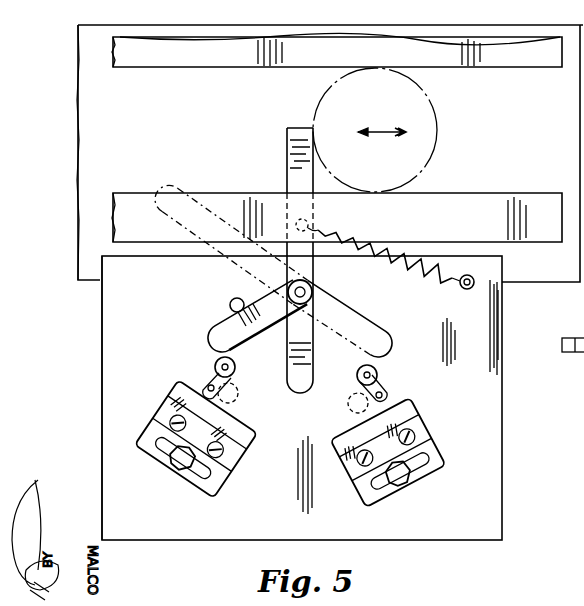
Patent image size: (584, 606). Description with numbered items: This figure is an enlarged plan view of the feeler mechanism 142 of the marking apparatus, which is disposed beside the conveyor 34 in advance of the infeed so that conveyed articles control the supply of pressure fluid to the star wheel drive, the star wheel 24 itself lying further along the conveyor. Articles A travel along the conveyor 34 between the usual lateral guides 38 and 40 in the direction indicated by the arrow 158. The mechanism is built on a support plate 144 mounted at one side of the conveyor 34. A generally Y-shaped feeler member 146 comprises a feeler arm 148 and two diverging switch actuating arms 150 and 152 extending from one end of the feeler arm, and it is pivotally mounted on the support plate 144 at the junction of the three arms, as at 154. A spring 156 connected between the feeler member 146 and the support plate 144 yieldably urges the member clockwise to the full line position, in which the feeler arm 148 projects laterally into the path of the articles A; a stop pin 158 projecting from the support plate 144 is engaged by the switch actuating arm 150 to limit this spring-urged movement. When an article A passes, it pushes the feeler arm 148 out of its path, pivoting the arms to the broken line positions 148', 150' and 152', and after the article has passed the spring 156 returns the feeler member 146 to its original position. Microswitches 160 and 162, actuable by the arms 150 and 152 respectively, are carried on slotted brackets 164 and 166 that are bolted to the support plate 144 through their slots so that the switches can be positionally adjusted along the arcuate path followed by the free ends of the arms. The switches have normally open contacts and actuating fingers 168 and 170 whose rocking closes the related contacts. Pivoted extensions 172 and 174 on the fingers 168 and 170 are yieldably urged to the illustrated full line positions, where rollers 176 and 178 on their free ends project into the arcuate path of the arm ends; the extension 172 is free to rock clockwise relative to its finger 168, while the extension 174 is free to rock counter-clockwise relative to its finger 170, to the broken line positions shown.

The star wheel 24 is at (573, 334).
The conveyor 34 is at (90, 137).
The lateral guide 38 is at (150, 68).
The lateral guide 40 is at (497, 197).
The feeler mechanism 142 is at (100, 318).
The support plate 144 is at (108, 422).
The feeler member 146 is at (322, 273).
The feeler arm 148 is at (274, 254).
The feeler arm (broken line position) 148' is at (218, 244).
The switch actuating arm 150 is at (246, 316).
The switch actuating arm (broken line position) 150' is at (293, 402).
The switch actuating arm 152 is at (319, 368).
The switch actuating arm (broken line position) 152' is at (362, 318).
The pivot 154 is at (313, 292).
The spring 156 is at (423, 275).
The stop pin 158 is at (206, 294).
The microswitch 160 is at (189, 450).
The microswitch 162 is at (409, 451).
The slotted bracket 164 is at (183, 458).
The slotted bracket 166 is at (401, 471).
The actuating finger 168 is at (205, 385).
The actuating finger 170 is at (390, 394).
The pivoted extension 172 is at (213, 365).
The pivoted extension 174 is at (388, 382).
The roller 176 is at (193, 363).
The roller 178 is at (396, 371).
The article A is at (425, 126).